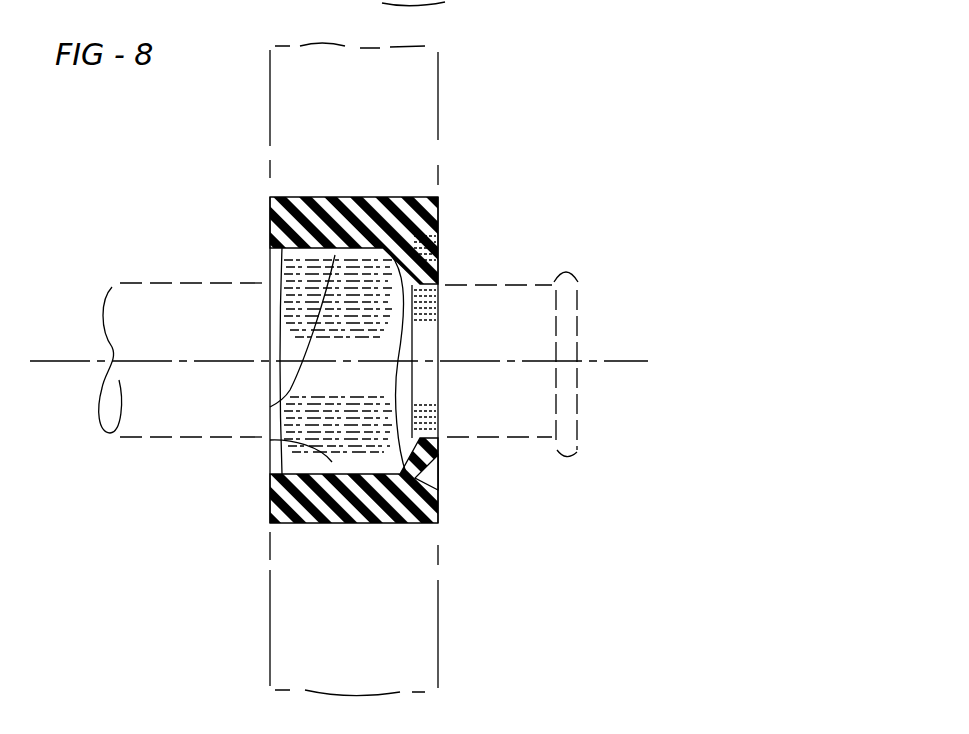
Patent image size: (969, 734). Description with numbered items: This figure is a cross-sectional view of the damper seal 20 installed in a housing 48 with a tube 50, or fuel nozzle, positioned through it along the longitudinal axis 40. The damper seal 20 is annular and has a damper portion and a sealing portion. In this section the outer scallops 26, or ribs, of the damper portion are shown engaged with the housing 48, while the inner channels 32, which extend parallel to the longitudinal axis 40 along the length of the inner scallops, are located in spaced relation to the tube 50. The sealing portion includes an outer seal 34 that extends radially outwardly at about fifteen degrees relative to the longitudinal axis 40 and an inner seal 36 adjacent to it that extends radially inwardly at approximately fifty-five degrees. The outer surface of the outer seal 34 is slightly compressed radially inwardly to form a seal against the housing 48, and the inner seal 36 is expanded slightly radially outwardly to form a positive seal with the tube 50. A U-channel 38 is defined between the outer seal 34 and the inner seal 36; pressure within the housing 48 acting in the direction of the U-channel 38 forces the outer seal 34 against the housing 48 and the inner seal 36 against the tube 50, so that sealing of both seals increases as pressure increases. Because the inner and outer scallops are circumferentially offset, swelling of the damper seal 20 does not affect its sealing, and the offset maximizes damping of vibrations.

The damper seal 20 is at (395, 362).
The outer scallops 26 is at (355, 197).
The inner channels 32 is at (270, 406).
The outer seal 34 is at (437, 503).
The inner seal 36 is at (437, 274).
The U-channel 38 is at (437, 251).
The longitudinal axis 40 is at (595, 359).
The housing 48 is at (440, 77).
The tube 50 is at (598, 300).